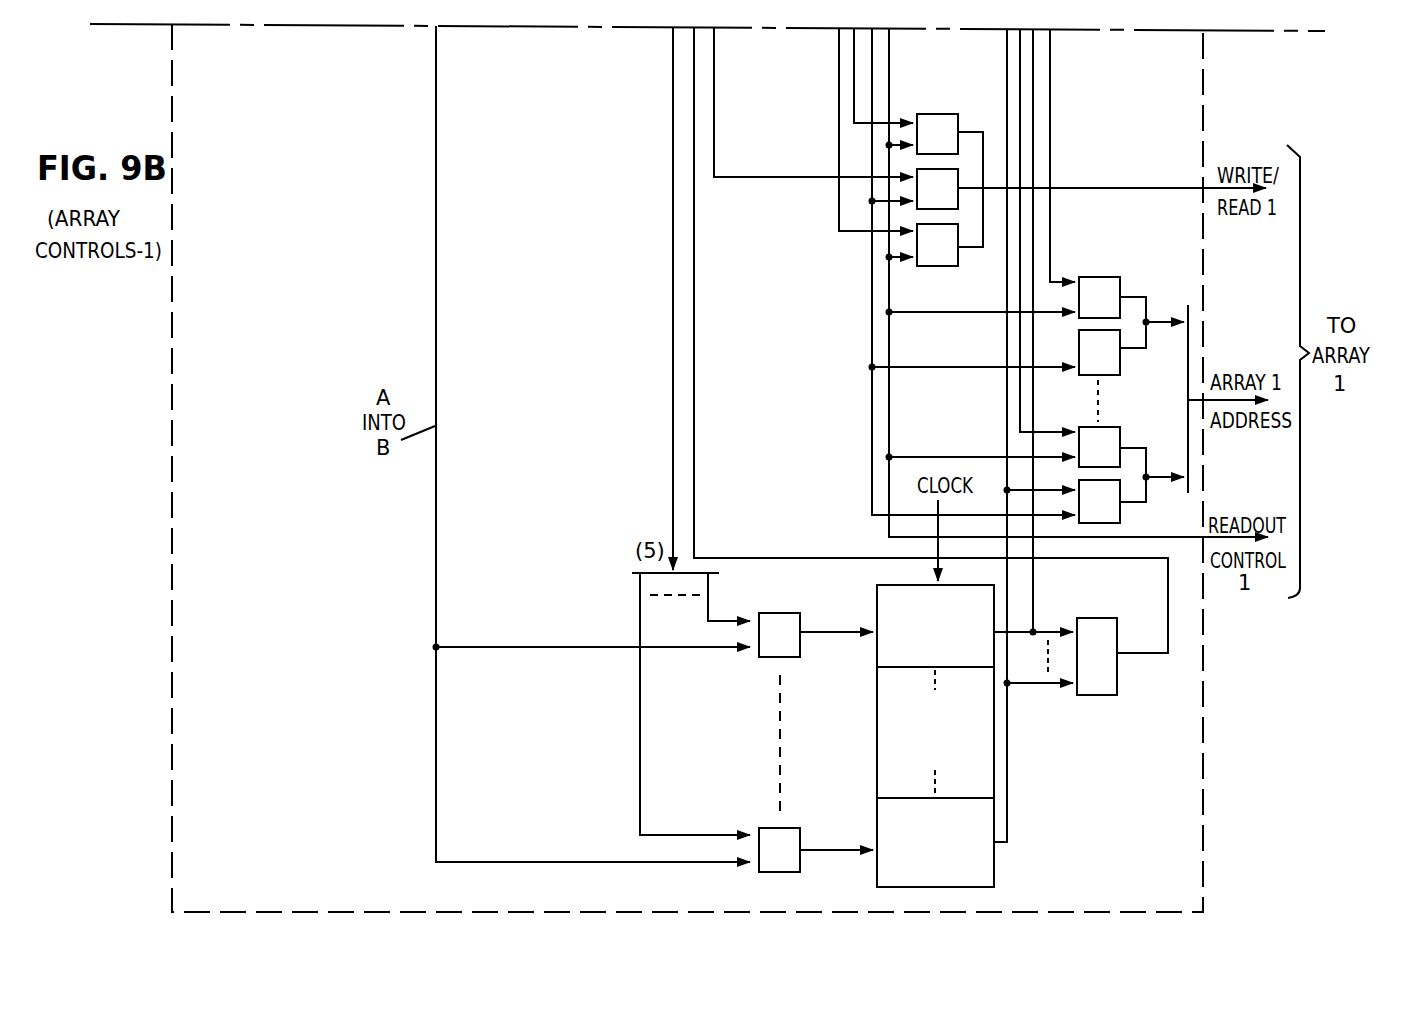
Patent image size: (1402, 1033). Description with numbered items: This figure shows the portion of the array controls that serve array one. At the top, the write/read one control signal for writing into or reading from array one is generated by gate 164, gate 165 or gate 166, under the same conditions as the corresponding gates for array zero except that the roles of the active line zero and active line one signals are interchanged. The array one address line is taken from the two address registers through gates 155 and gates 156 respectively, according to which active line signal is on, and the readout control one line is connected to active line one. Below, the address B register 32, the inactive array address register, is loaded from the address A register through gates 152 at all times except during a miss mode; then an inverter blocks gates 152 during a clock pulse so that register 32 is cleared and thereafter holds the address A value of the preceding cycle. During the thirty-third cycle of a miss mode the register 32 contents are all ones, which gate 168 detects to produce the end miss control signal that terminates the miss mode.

The address B register 32 is at (985, 855).
The gates 152 is at (800, 615).
The gates 155 is at (1118, 275).
The gates 156 is at (1120, 362).
The gate 164 is at (940, 114).
The gate 165 is at (960, 170).
The gate 166 is at (953, 260).
The gate 168 is at (1078, 690).